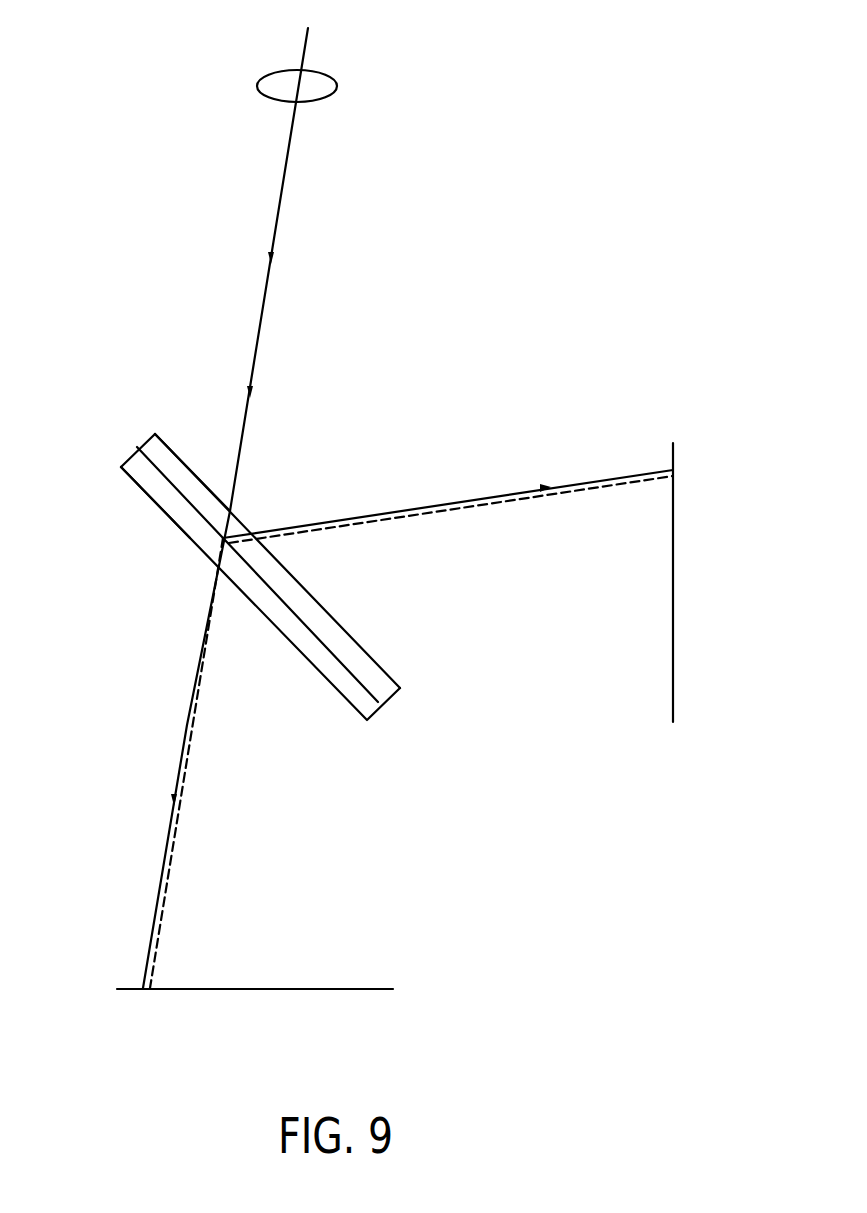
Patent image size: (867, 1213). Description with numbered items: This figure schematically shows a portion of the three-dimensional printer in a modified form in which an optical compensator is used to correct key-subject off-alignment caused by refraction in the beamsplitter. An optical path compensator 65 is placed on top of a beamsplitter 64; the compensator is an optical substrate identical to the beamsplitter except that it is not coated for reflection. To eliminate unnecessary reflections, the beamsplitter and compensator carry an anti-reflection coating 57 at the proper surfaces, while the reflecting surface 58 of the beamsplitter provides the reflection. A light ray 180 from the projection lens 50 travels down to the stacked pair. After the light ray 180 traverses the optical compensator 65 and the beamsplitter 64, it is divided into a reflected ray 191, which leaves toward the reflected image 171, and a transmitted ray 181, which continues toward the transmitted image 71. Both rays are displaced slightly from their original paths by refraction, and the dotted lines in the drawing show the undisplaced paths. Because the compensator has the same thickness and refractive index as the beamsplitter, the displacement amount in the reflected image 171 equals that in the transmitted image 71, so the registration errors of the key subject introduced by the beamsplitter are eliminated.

The projection lens 50 is at (320, 72).
The anti-reflection coating 57 is at (165, 434).
The reflecting surface 58 is at (142, 458).
The beamsplitter 64 is at (357, 698).
The optical path compensator 65 is at (357, 637).
The transmitted image 71 is at (370, 989).
The reflected image 171 is at (677, 450).
The light ray 180 is at (258, 323).
The transmitted ray 181 is at (187, 725).
The reflected ray 191 is at (503, 495).